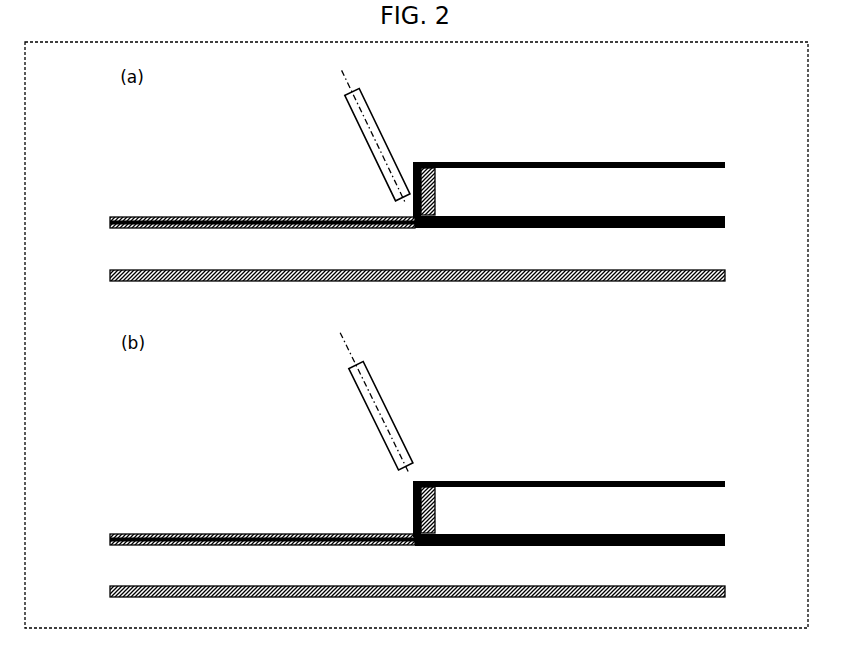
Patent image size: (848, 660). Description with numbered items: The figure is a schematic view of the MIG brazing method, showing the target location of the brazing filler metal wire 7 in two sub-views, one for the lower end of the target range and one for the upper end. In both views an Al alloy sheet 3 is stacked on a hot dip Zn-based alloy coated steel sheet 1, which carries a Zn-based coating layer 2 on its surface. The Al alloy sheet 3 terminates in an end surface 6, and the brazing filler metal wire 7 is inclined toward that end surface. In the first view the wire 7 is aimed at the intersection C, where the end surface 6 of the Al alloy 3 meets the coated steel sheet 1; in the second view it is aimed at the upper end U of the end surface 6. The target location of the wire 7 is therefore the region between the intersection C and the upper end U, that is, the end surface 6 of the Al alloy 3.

The hot dip Zn-based alloy coated steel sheet 1 is at (702, 248).
The Zn-based coating layer 2 is at (110, 220).
The Al alloy sheet 3 is at (713, 180).
The end surface 6 is at (437, 192).
The brazing filler metal wire 7 is at (363, 137).
The intersection C is at (407, 213).
The upper end U is at (412, 481).